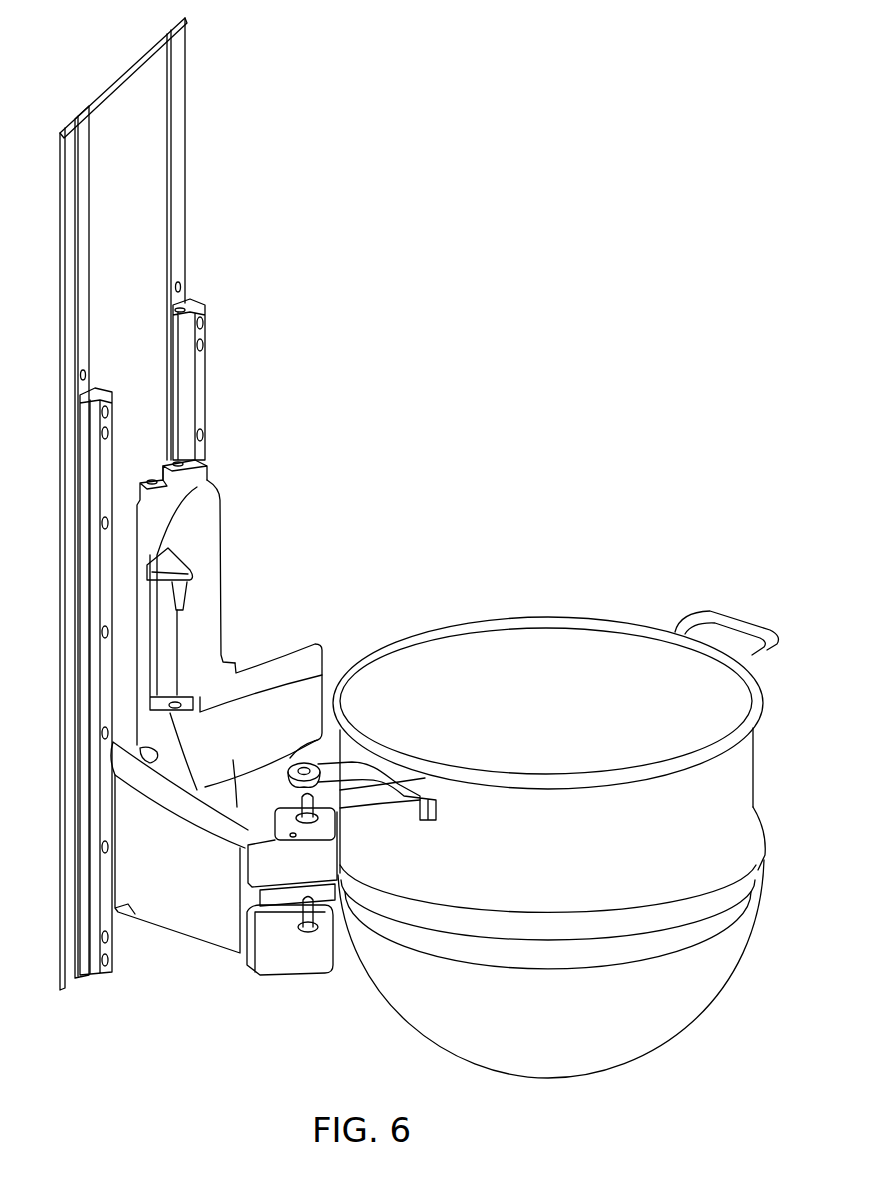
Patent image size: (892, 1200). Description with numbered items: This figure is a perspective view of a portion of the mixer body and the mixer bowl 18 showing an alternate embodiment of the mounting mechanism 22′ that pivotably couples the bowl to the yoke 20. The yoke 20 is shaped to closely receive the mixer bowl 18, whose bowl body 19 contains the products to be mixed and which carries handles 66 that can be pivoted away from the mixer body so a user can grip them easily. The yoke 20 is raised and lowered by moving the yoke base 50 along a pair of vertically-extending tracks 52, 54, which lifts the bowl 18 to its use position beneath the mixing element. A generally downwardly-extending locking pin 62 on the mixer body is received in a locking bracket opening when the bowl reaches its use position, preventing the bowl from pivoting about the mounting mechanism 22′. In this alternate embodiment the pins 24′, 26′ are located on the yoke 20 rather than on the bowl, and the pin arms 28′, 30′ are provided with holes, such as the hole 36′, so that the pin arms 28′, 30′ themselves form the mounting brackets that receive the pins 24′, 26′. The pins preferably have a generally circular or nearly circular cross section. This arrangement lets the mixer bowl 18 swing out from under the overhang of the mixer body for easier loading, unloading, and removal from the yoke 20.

The vertically-extending track 52 is at (85, 437).
The vertically-extending track 54 is at (200, 387).
The yoke base 50 is at (210, 513).
The locking pin 62 is at (182, 598).
The hole 36′ is at (290, 760).
The yoke 20 is at (180, 930).
The pin arm 28′ is at (306, 764).
The pin 24′ is at (340, 803).
The mounting mechanism 22′ is at (352, 853).
The pin arm 30′ is at (355, 913).
The pin 26′ is at (307, 932).
The bowl body 19 is at (745, 762).
The mixer bowl 18 is at (748, 797).
The handle 66 is at (427, 777).